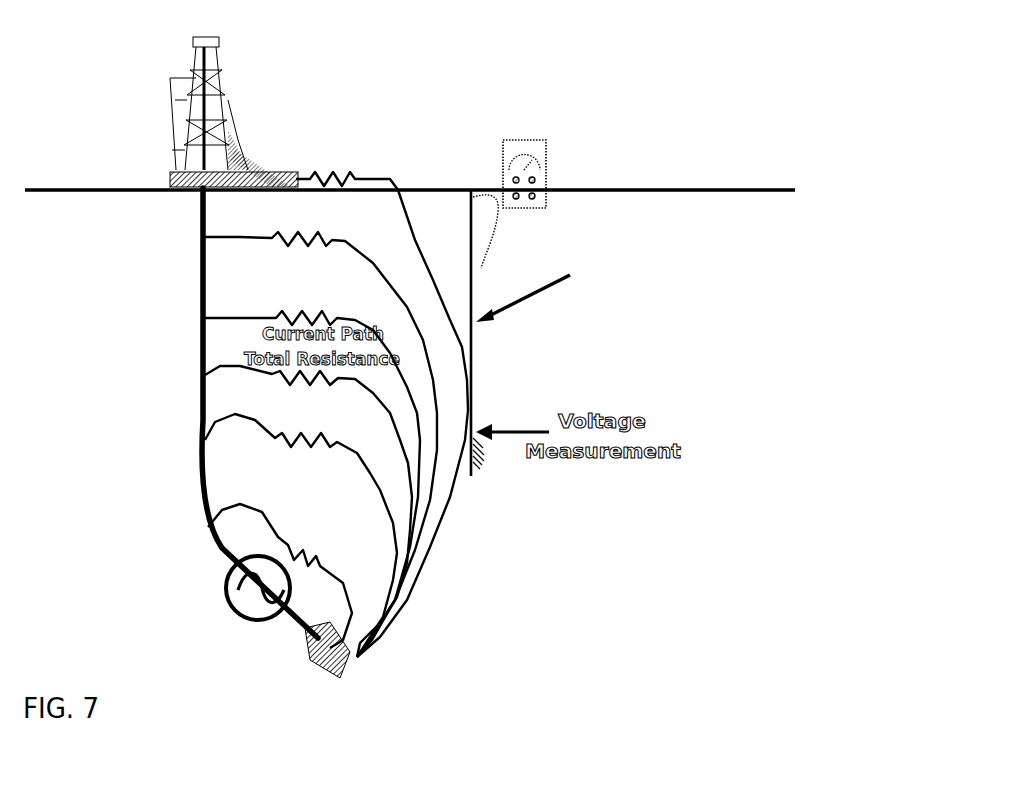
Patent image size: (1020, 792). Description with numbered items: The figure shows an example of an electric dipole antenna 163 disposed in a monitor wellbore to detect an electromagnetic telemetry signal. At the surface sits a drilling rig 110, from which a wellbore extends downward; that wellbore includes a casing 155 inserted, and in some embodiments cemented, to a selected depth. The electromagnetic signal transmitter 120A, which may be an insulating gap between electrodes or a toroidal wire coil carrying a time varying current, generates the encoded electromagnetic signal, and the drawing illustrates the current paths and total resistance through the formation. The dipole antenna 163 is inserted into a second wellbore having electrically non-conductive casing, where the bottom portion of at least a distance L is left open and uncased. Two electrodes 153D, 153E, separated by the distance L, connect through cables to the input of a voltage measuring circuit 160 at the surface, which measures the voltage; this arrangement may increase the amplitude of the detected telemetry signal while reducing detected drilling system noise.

The drilling rig 110 is at (195, 72).
The electromagnetic signal transmitter 120A is at (228, 594).
The electrode 153D is at (461, 205).
The electrode 153E is at (484, 266).
The casing 155 is at (199, 216).
The voltage measuring circuit 160 is at (548, 165).
The electric dipole antenna 163 is at (634, 291).